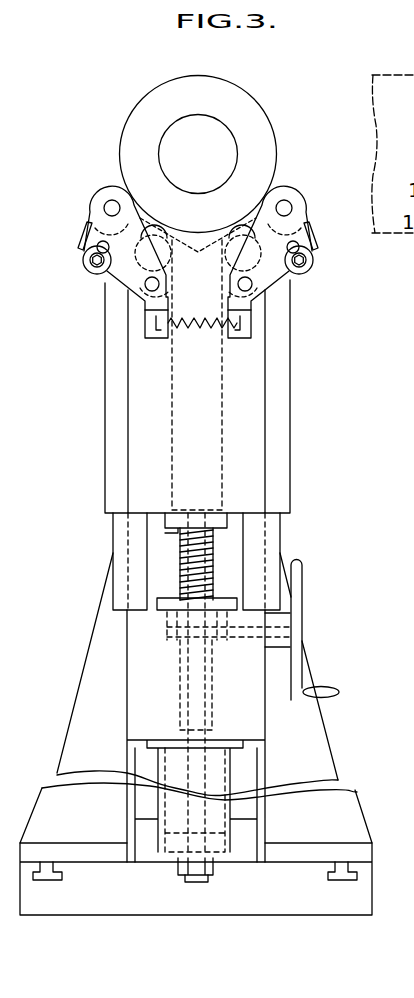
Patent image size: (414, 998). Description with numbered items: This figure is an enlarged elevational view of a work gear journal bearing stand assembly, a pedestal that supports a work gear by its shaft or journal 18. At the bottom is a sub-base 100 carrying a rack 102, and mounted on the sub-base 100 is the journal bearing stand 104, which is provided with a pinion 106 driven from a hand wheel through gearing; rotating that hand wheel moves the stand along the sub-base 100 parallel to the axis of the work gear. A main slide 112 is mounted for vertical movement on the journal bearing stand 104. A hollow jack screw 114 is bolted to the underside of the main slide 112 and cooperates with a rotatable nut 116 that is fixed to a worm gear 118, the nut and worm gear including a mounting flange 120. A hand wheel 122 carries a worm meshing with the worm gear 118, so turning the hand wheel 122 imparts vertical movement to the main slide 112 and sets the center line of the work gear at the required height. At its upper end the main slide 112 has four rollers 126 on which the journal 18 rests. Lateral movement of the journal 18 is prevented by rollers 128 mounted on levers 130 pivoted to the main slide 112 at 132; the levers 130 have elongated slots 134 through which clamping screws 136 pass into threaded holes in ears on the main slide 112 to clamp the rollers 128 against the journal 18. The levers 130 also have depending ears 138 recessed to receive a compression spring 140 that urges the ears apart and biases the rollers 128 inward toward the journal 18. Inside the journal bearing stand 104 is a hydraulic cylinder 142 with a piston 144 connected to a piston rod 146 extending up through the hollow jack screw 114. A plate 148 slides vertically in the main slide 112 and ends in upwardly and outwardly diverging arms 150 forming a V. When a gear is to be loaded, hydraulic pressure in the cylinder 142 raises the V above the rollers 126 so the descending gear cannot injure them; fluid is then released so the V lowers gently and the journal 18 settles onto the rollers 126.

The shaft or journal 18 is at (272, 127).
The sub-base 100 is at (120, 915).
The rack 102 is at (178, 875).
The journal bearing stand 104 is at (335, 766).
The pinion 106 is at (210, 877).
The main slide 112 is at (290, 468).
The hollow jack screw 114 is at (178, 545).
The rotatable nut 116 is at (165, 627).
The worm gear 118 is at (177, 645).
The mounting flange 120 is at (165, 600).
The hand wheel 122 is at (303, 600).
The rollers 126 is at (180, 234).
The rollers 128 is at (303, 203).
The levers 130 is at (272, 286).
The pivot 132 is at (145, 286).
The elongated slots 134 is at (80, 240).
The clamping screws 136 is at (90, 273).
The depending ears 138 is at (157, 340).
The compression spring 140 is at (215, 330).
The hydraulic cylinder 142 is at (230, 819).
The piston 144 is at (173, 832).
The piston rod 146 is at (180, 703).
The plate 148 is at (170, 410).
The diverging arms 150 is at (138, 200).